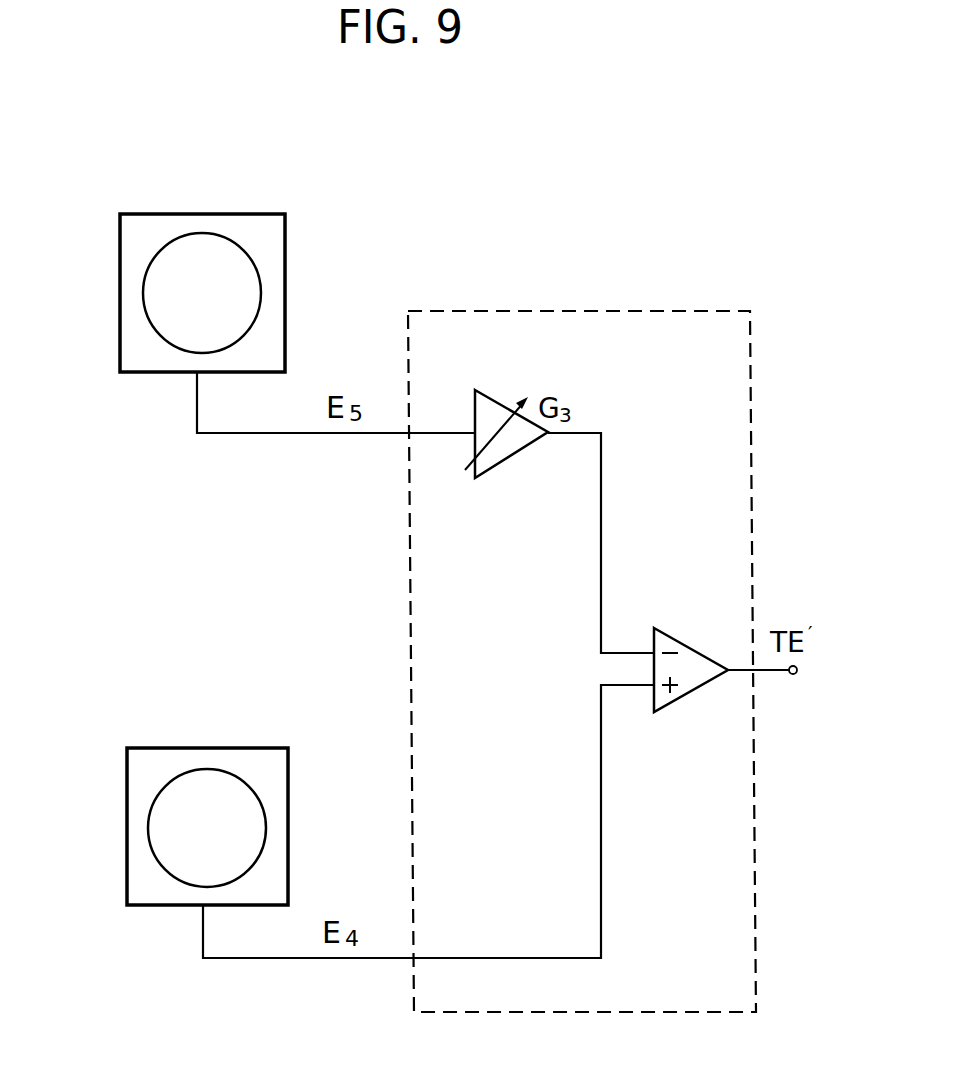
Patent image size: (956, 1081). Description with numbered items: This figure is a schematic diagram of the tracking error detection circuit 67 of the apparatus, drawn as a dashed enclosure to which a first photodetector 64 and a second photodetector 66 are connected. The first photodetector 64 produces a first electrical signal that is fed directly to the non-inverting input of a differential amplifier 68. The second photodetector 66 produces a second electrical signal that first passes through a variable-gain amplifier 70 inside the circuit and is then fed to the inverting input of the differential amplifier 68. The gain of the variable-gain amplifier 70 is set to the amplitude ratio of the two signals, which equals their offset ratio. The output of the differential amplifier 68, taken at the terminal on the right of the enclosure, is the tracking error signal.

The first photodetector 64 is at (127, 835).
The second photodetector 66 is at (120, 300).
The tracking error detection circuit 67 is at (752, 425).
The differential amplifier 68 is at (690, 695).
The variable-gain amplifier 70 is at (507, 465).